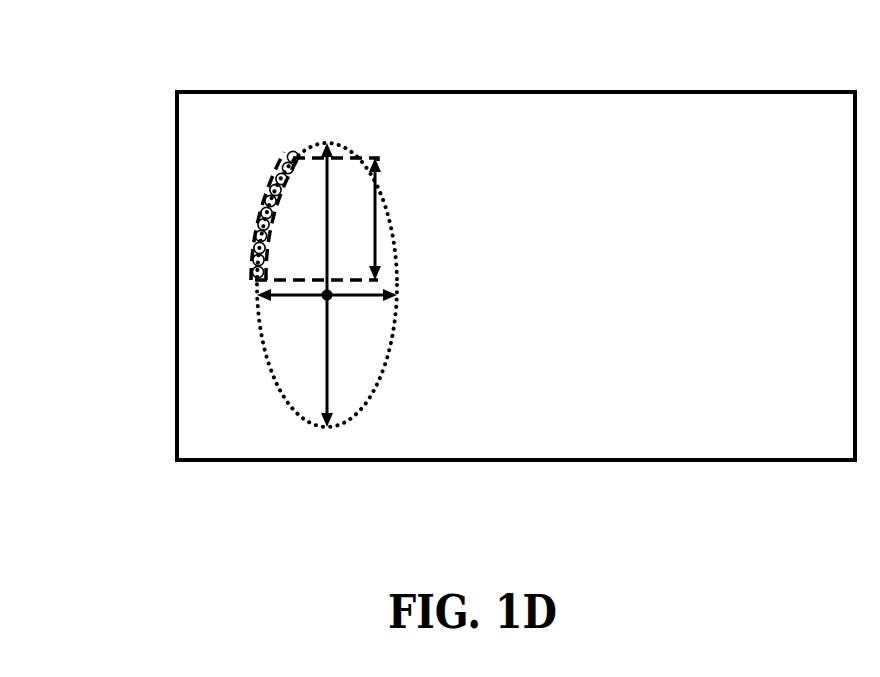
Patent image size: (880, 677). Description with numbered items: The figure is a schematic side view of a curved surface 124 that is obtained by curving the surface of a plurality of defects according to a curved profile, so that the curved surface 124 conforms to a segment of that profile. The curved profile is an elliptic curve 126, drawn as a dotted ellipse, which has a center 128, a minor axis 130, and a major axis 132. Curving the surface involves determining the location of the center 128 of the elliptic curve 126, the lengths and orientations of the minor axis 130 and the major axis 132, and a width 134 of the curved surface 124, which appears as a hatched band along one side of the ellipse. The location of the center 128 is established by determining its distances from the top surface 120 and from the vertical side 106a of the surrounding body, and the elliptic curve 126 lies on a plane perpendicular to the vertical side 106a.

The top surface 120 is at (390, 92).
The vertical side 106a is at (177, 325).
The curved surface 124 is at (256, 213).
The elliptic curve 126 is at (257, 310).
The center 128 is at (327, 296).
The minor axis 130 is at (362, 302).
The major axis 132 is at (332, 338).
The width 134 is at (378, 222).